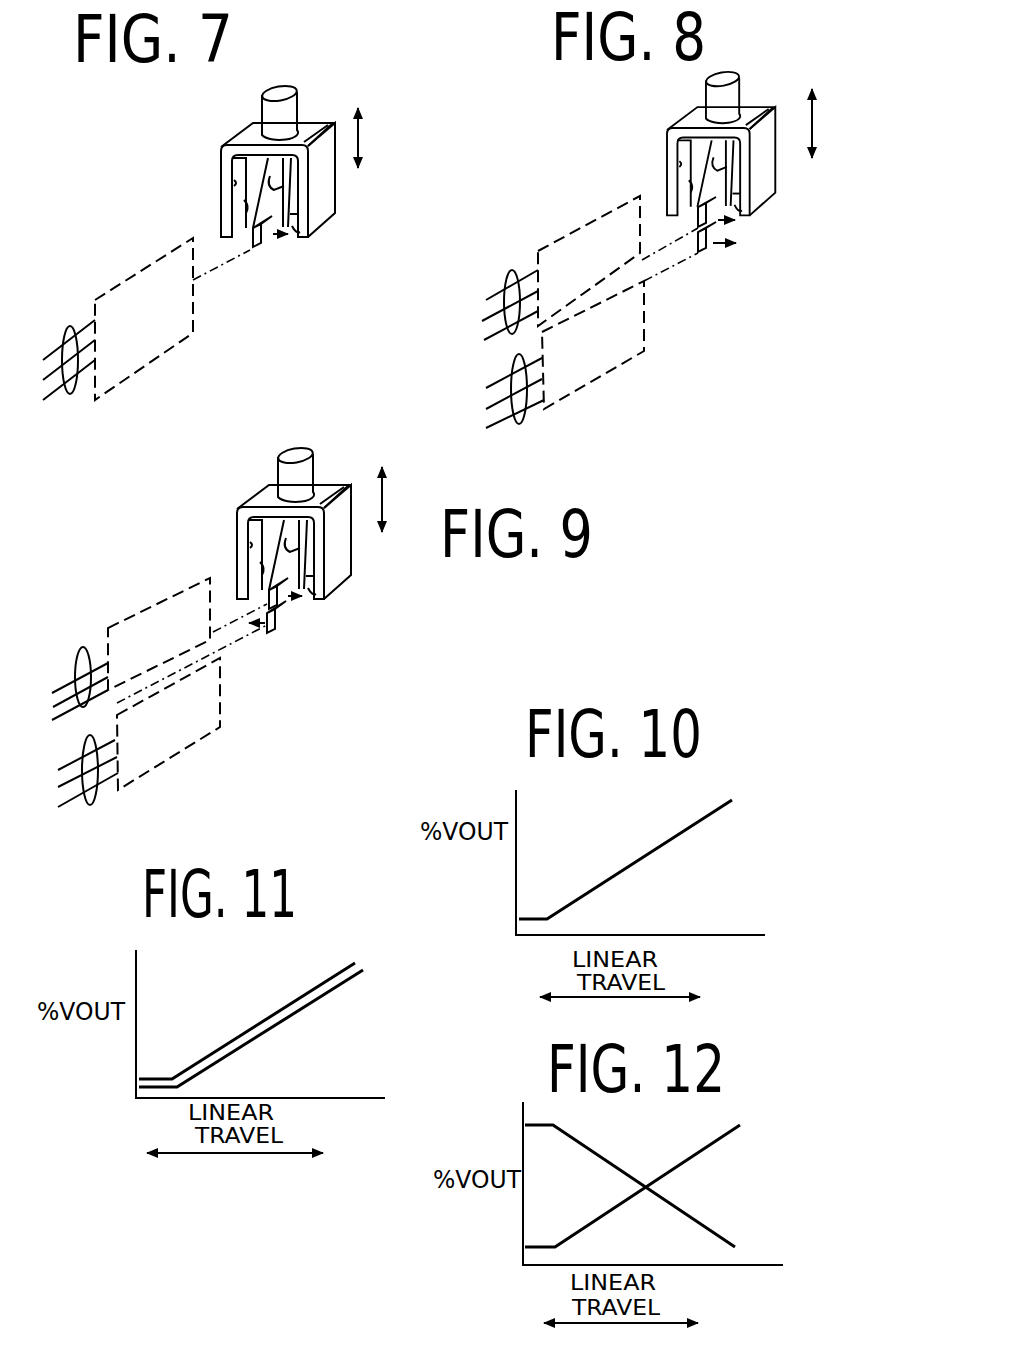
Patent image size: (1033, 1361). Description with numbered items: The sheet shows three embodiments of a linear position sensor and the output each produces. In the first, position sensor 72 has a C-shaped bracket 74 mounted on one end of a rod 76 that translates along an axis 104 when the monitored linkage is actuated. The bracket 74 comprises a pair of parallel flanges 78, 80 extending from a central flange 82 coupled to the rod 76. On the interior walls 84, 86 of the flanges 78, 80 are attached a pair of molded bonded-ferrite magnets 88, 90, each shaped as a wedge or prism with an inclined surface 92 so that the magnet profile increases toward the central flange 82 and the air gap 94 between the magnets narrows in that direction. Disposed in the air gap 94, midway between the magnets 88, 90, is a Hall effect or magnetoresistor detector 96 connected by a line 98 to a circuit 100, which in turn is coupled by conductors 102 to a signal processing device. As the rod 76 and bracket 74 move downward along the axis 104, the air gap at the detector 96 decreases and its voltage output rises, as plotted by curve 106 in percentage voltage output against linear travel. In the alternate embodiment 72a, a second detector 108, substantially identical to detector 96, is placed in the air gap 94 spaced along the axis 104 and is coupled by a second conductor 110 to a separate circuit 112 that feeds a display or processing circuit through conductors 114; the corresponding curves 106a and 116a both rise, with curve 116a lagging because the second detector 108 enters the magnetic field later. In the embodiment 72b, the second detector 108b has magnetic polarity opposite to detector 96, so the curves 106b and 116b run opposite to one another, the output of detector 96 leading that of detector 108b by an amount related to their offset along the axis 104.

In FIG. 7, the position sensor 72 is at (122, 202).
In FIG. 8, the alternate embodiment of linear position sensor 72a is at (588, 146).
In FIG. 9, the alternate embodiment of linear position sensor 72b is at (187, 505).
In FIG. 7, the C-shaped bracket 74 is at (222, 134).
In FIG. 8, the C-shaped bracket 74 is at (684, 105).
In FIG. 9, the C-shaped bracket 74 is at (240, 490).
In FIG. 7, the rod 76 is at (288, 100).
In FIG. 8, the rod 76 is at (744, 70).
In FIG. 9, the rod 76 is at (307, 460).
In FIG. 7, the flange 78 is at (219, 163).
In FIG. 8, the flange 78 is at (666, 140).
In FIG. 9, the flange 78 is at (238, 520).
In FIG. 7, the flange 80 is at (323, 202).
In FIG. 8, the flange 80 is at (766, 179).
In FIG. 9, the flange 80 is at (337, 553).
In FIG. 7, the central flange 82 is at (308, 128).
In FIG. 8, the central flange 82 is at (758, 112).
In FIG. 9, the central flange 82 is at (323, 485).
In FIG. 7, the interior wall 84 is at (233, 182).
In FIG. 8, the interior wall 84 is at (682, 158).
In FIG. 9, the interior wall 84 is at (250, 533).
In FIG. 7, the interior wall 86 is at (293, 220).
In FIG. 8, the interior wall 86 is at (751, 198).
In FIG. 9, the interior wall 86 is at (317, 570).
In FIG. 7, the magnet 88 is at (247, 192).
In FIG. 8, the magnet 88 is at (695, 167).
In FIG. 9, the magnet 88 is at (247, 543).
In FIG. 7, the magnet 90 is at (297, 230).
In FIG. 8, the magnet 90 is at (744, 225).
In FIG. 9, the magnet 90 is at (327, 590).
In FIG. 7, the inclined surface 92 is at (243, 203).
In FIG. 8, the inclined surface 92 is at (698, 170).
In FIG. 9, the inclined surface 92 is at (267, 543).
In FIG. 7, the air gap 94 is at (276, 183).
In FIG. 8, the air gap 94 is at (737, 160).
In FIG. 9, the air gap 94 is at (303, 538).
In FIG. 7, the detector 96 is at (268, 243).
In FIG. 8, the detector 96 is at (700, 204).
In FIG. 9, the detector 96 is at (288, 600).
In FIG. 7, the line 98 is at (212, 272).
In FIG. 8, the line 98 is at (668, 244).
In FIG. 9, the line 98 is at (230, 623).
In FIG. 7, the circuit 100 is at (163, 330).
In FIG. 8, the circuit 100 is at (608, 286).
In FIG. 9, the circuit 100 is at (176, 648).
In FIG. 7, the conductors 102 is at (67, 333).
In FIG. 8, the conductors 102 is at (510, 270).
In FIG. 9, the conductors 102 is at (80, 653).
In FIG. 7, the axis 104 is at (362, 137).
In FIG. 8, the axis 104 is at (816, 121).
In FIG. 9, the axis 104 is at (385, 498).
In FIG. 10, the curve 106 is at (627, 865).
In FIG. 11, the curve 106a is at (240, 1035).
In FIG. 12, the curve 106b is at (593, 1227).
In FIG. 8, the second detector 108 is at (712, 251).
In FIG. 9, the detector 108b is at (286, 630).
In FIG. 8, the second conductor 110 is at (666, 275).
In FIG. 9, the second conductor 110 is at (233, 655).
In FIG. 8, the circuit 112 is at (610, 363).
In FIG. 9, the circuit 112 is at (182, 733).
In FIG. 8, the conductors 114 is at (523, 416).
In FIG. 9, the conductors 114 is at (97, 800).
In FIG. 11, the curve 116a is at (253, 1040).
In FIG. 12, the curve 116b is at (620, 1167).